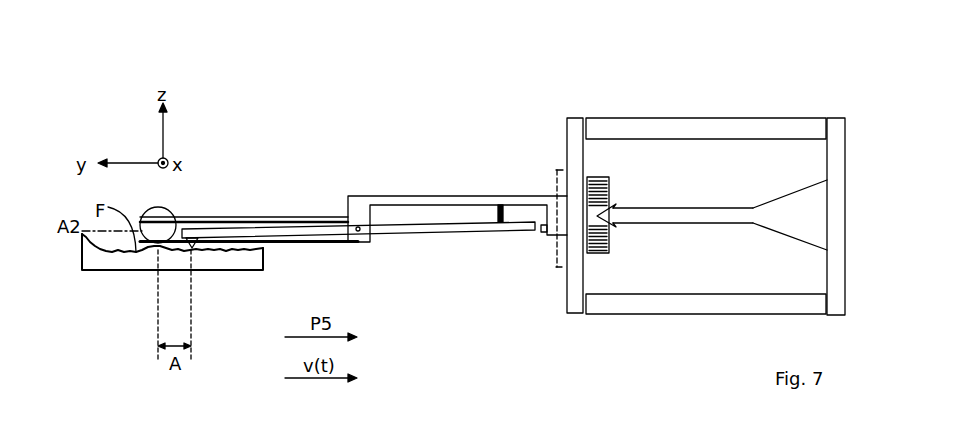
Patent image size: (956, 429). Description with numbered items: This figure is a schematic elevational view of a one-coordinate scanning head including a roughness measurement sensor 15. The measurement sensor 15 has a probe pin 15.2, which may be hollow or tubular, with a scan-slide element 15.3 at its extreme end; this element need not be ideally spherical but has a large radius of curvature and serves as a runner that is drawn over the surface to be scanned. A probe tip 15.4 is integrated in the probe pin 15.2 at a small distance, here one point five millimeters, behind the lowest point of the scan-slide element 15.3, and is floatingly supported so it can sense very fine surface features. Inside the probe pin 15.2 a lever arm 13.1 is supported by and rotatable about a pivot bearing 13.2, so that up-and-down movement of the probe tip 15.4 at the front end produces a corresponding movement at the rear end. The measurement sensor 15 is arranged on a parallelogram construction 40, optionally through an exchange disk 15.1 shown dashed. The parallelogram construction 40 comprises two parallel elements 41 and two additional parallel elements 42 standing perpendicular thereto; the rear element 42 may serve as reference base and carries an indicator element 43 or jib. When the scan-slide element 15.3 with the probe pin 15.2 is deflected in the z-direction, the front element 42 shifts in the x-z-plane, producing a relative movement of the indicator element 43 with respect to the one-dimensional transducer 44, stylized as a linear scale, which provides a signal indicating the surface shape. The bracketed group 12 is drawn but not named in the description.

The detector / receiving unit 12 is at (843, 90).
The lever arm 13.1 is at (447, 230).
The pivot bearing 13.2 is at (354, 246).
The roughness measurement sensor 15 is at (560, 90).
The exchange disk 15.1 is at (561, 168).
The probe pin 15.2 is at (475, 200).
The scan-slide element 15.3 is at (153, 244).
The probe tip 15.4 is at (200, 245).
The parallelogram construction 40 is at (765, 106).
The parallel elements 41 is at (650, 127).
The additional parallel elements 42 is at (836, 152).
The indicator element 43 is at (713, 208).
The 1D-transducer 44 is at (609, 182).